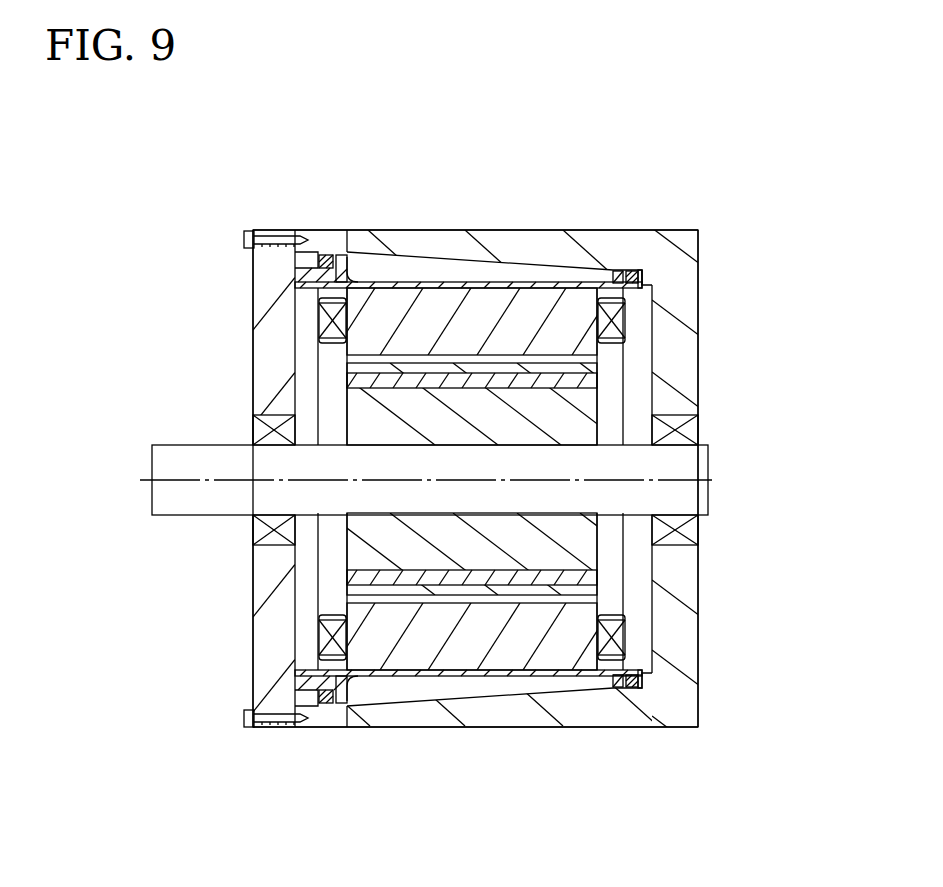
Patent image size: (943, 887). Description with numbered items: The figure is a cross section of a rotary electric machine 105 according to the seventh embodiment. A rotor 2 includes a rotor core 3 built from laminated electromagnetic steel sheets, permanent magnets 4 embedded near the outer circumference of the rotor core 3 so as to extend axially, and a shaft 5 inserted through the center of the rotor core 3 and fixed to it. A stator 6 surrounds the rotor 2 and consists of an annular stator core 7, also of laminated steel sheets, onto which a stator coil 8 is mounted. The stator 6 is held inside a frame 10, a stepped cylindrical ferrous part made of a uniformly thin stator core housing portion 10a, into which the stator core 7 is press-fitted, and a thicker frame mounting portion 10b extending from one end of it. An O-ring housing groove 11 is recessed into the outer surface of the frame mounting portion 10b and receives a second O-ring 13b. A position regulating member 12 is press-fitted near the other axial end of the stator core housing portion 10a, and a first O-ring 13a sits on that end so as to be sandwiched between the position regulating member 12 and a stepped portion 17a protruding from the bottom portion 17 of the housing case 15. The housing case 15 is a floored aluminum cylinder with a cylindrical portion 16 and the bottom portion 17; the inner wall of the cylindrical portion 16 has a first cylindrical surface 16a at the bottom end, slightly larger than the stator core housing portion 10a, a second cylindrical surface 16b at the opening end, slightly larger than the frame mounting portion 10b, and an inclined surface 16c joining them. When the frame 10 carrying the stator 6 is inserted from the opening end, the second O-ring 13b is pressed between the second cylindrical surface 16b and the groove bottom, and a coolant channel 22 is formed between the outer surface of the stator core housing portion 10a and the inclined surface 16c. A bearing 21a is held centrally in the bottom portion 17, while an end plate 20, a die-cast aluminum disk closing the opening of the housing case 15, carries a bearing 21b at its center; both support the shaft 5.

The rotary electric machine 105 is at (186, 157).
The rotor 2 is at (333, 386).
The rotor core 3 is at (587, 407).
The permanent magnets 4 is at (600, 383).
The shaft 5 is at (697, 463).
The stator 6 is at (324, 609).
The stator core 7 is at (585, 617).
The stator coil 8 is at (613, 640).
The frame 10 is at (408, 272).
The stator core housing portion 10a is at (462, 282).
The frame mounting portion 10b is at (346, 252).
The O-ring housing groove 11 is at (317, 258).
The position regulating member 12 is at (620, 270).
The first O-ring 13a is at (634, 270).
The second O-ring 13b is at (326, 253).
The housing case 15 is at (708, 258).
The cylindrical portion 16 is at (562, 245).
The first cylindrical surface 16a is at (627, 690).
The second cylindrical surface 16b is at (333, 703).
The inclined surface 16c is at (440, 695).
The bottom portion 17 is at (683, 302).
The stepped portion 17a is at (647, 277).
The end plate 20 is at (272, 313).
The bearing 21a is at (690, 432).
The bearing 21b is at (258, 430).
The coolant channel 22 is at (505, 270).